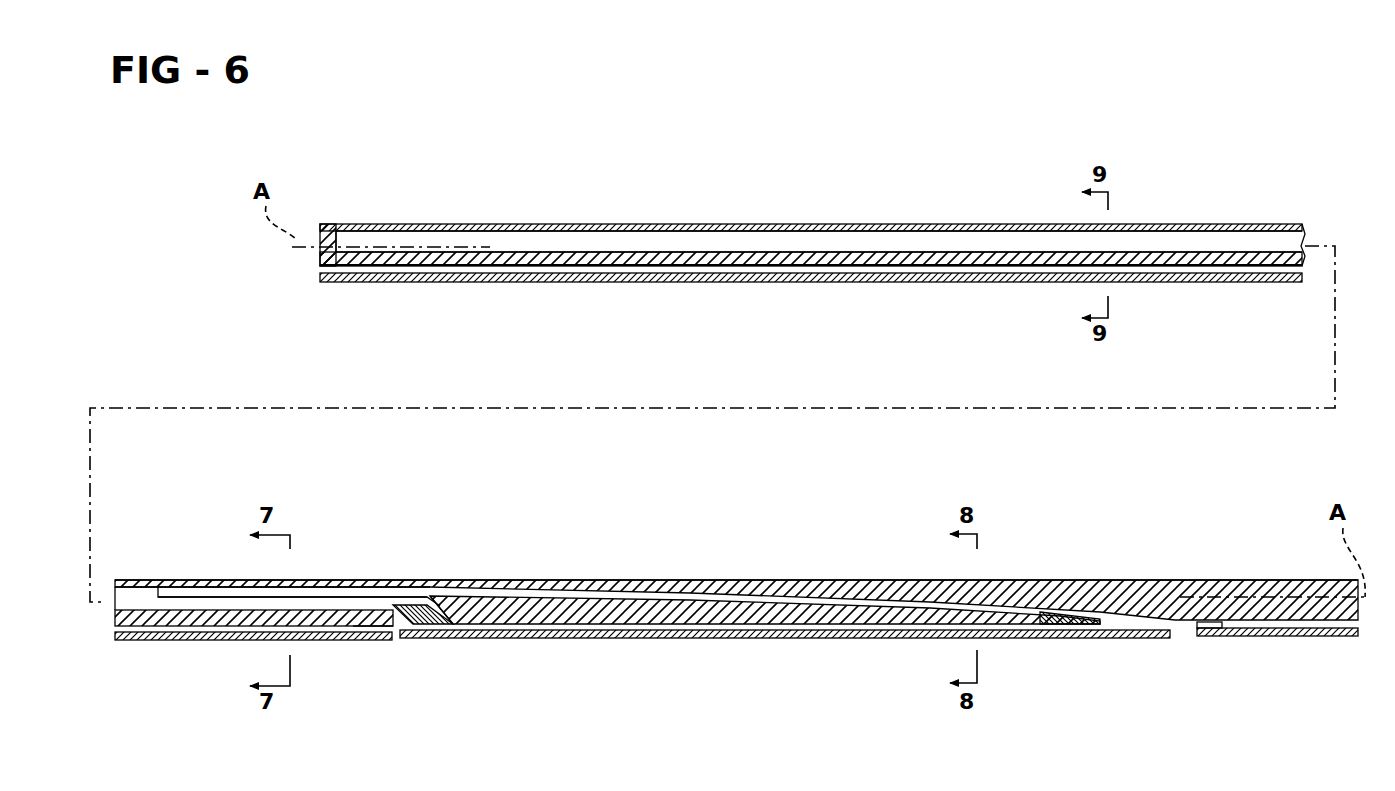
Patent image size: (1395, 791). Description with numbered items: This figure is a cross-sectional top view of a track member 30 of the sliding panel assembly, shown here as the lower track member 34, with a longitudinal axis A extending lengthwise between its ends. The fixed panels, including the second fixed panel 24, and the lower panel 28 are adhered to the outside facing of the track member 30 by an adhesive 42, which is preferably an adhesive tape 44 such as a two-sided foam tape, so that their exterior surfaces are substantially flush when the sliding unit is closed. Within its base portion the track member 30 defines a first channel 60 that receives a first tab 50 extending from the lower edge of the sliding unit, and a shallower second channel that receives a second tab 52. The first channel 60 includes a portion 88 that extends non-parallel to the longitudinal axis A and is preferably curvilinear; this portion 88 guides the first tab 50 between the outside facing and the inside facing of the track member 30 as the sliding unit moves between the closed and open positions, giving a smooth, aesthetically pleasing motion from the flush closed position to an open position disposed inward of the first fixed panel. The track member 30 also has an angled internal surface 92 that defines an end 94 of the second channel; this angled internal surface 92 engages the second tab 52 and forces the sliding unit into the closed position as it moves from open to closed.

The second fixed panel 24 is at (1293, 637).
The lower panel 28 is at (800, 639).
The track member 30 is at (300, 262).
The lower track member 34 is at (328, 224).
The adhesive 42 is at (357, 628).
The adhesive tape 44 is at (1208, 636).
The first tab 50 is at (1105, 625).
The second tab 52 is at (422, 626).
The first channel 60 is at (610, 597).
The non-parallel portion 88 is at (538, 590).
The angled internal surface 92 is at (425, 596).
The end of second channel 94 is at (417, 600).